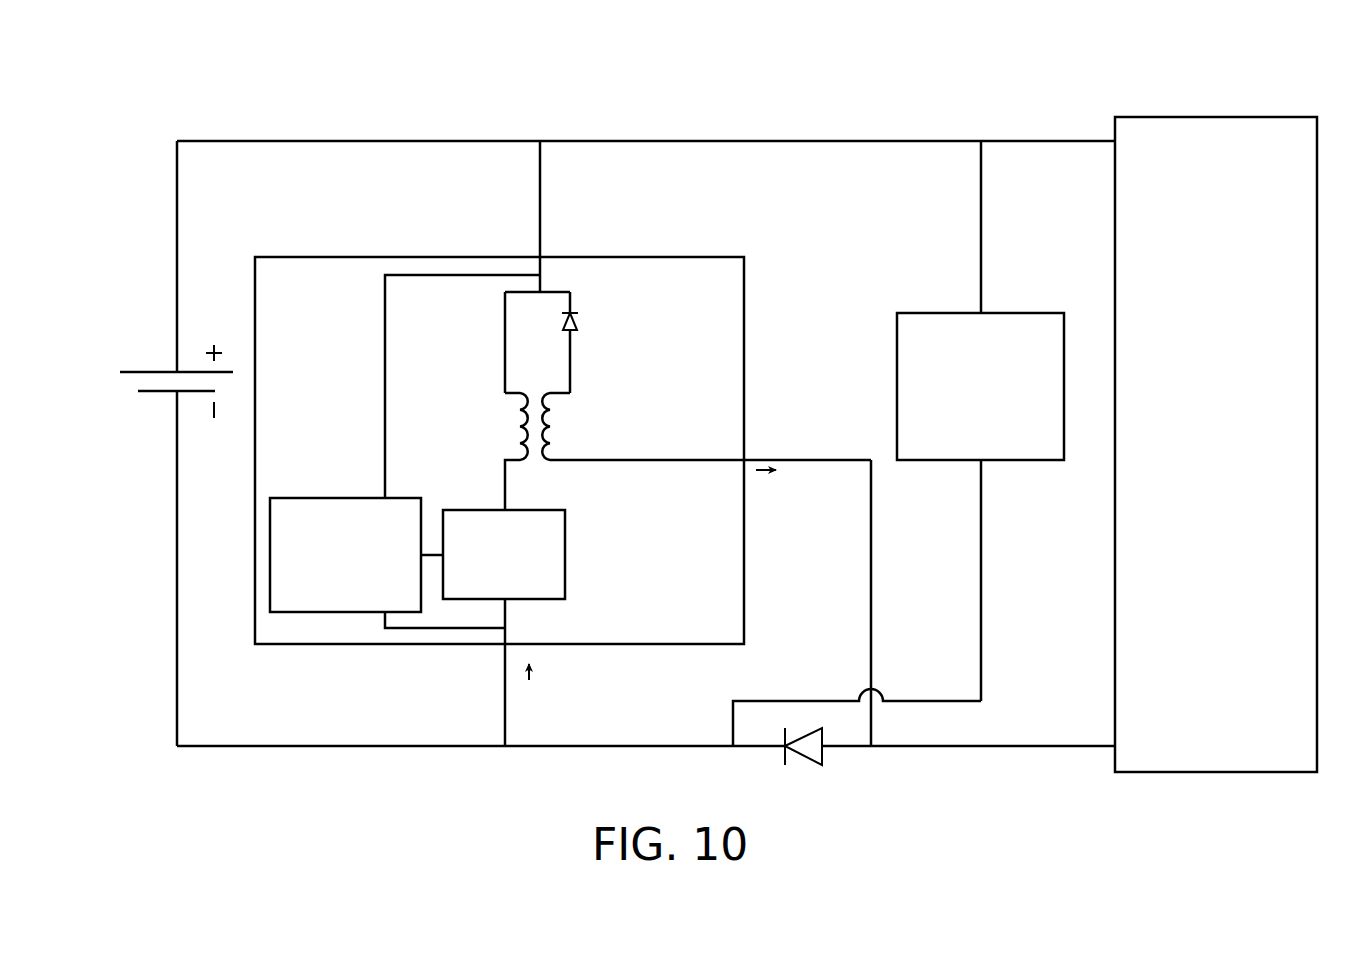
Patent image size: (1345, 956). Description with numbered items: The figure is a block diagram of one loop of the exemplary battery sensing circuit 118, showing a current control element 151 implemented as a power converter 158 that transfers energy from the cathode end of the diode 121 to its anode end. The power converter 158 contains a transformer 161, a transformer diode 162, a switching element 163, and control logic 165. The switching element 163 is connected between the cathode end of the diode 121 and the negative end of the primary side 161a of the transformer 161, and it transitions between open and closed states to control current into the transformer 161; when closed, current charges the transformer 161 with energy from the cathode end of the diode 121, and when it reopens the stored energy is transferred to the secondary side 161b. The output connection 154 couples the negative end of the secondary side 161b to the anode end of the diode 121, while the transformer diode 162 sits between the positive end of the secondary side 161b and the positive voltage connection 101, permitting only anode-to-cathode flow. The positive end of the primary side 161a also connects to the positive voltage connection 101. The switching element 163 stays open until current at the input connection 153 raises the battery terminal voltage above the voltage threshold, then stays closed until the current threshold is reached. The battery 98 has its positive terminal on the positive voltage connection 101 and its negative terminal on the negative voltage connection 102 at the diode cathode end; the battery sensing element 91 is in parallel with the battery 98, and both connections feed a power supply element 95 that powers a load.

The battery sensing circuit 118 is at (662, 62).
The positive voltage connection 101 is at (370, 141).
The negative voltage connection 102 is at (320, 745).
The power supply element 95 is at (1180, 117).
The battery 98 is at (177, 315).
The battery sensing element 91 is at (1012, 313).
The current control element 151 is at (631, 221).
The power converter 158 is at (744, 283).
The transformer 161 is at (653, 401).
The primary side 161a is at (497, 438).
The secondary side 161b is at (583, 438).
The transformer diode 162 is at (587, 321).
The switching element 163 is at (565, 555).
The control logic 165 is at (285, 498).
The input connection 153 is at (505, 675).
The output connection 154 is at (778, 460).
The diode 121 is at (808, 764).